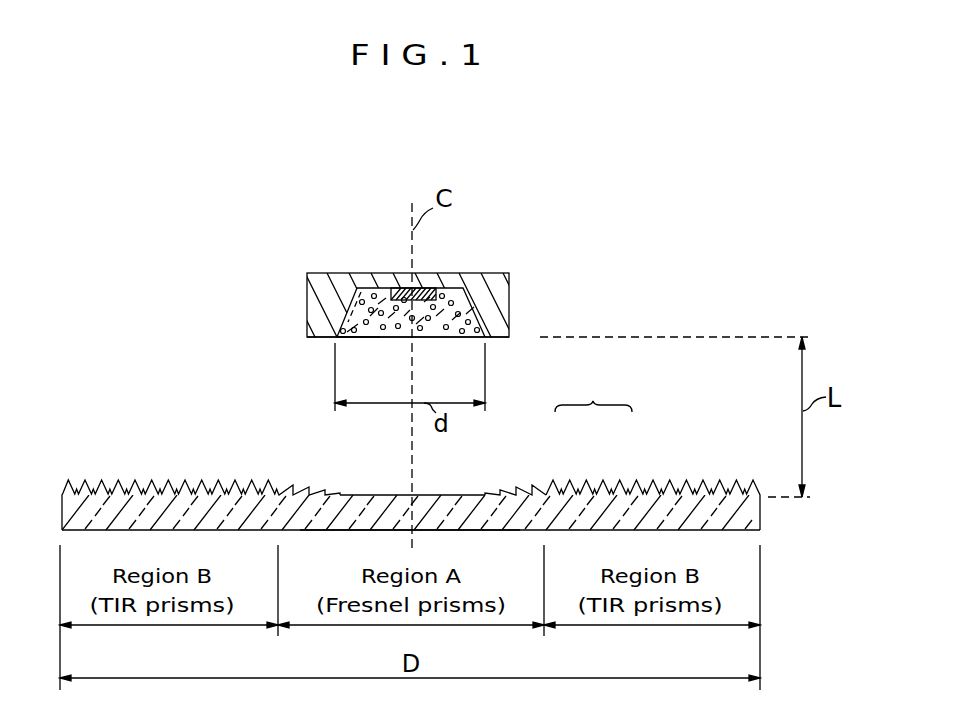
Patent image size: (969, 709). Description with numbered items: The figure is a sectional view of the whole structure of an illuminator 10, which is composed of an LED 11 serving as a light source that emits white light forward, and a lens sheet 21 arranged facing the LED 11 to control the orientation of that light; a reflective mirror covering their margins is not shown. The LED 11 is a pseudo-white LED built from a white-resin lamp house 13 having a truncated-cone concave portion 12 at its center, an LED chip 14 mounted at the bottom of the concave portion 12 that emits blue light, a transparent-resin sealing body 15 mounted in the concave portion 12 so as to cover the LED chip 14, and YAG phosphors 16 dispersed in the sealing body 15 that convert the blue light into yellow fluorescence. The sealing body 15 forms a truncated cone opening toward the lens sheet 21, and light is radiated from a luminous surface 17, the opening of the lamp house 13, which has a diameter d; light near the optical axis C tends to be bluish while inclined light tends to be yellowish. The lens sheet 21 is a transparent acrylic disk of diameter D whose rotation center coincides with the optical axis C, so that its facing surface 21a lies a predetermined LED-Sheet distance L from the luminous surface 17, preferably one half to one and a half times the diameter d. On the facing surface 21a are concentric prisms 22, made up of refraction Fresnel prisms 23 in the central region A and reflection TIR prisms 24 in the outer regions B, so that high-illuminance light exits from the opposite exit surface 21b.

The illuminator 10 is at (670, 256).
The LED 11 is at (297, 291).
The concave portion 12 is at (357, 293).
The lamp house 13 is at (401, 288).
The LED chip 14 is at (428, 290).
The sealing body 15 is at (477, 298).
The phosphors 16 is at (487, 323).
The luminous surface 17 is at (378, 338).
The lens sheet 21 is at (173, 461).
The facing surface 21a is at (399, 497).
The exit surface 21b is at (480, 530).
The prisms 22 is at (593, 391).
The Fresnel prisms 23 is at (510, 492).
The TIR prisms 24 is at (668, 489).